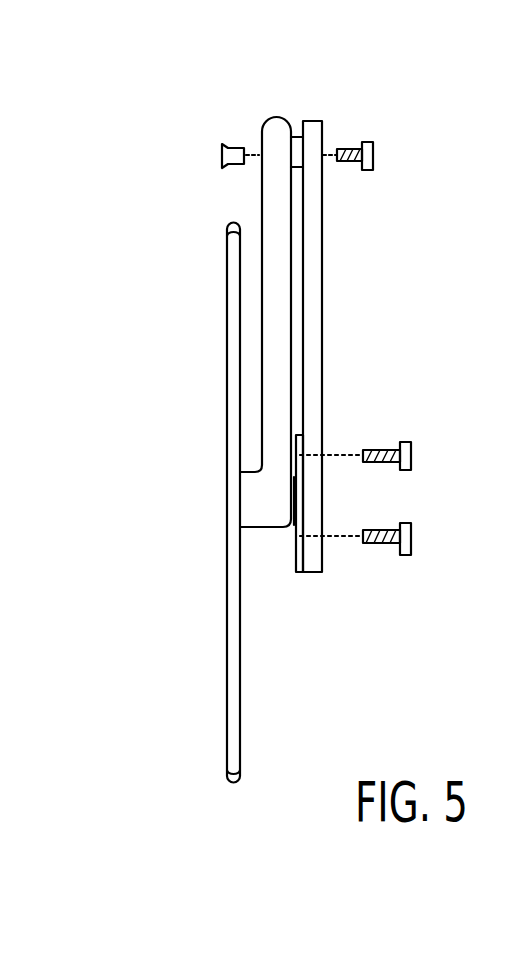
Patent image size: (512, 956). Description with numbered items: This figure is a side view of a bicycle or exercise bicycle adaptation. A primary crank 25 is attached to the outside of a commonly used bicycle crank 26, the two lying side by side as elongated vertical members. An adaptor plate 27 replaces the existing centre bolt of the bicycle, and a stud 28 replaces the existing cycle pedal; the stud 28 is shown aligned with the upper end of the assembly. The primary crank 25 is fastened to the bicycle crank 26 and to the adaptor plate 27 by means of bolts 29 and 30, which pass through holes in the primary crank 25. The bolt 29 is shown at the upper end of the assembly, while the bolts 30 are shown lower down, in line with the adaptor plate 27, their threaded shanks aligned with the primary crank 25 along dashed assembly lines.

The primary crank 25 is at (317, 272).
The bicycle crank 26 is at (260, 505).
The adaptor plate 27 is at (297, 522).
The stud 28 is at (231, 145).
The bolt 29 is at (373, 145).
The bolt 30 is at (415, 455).